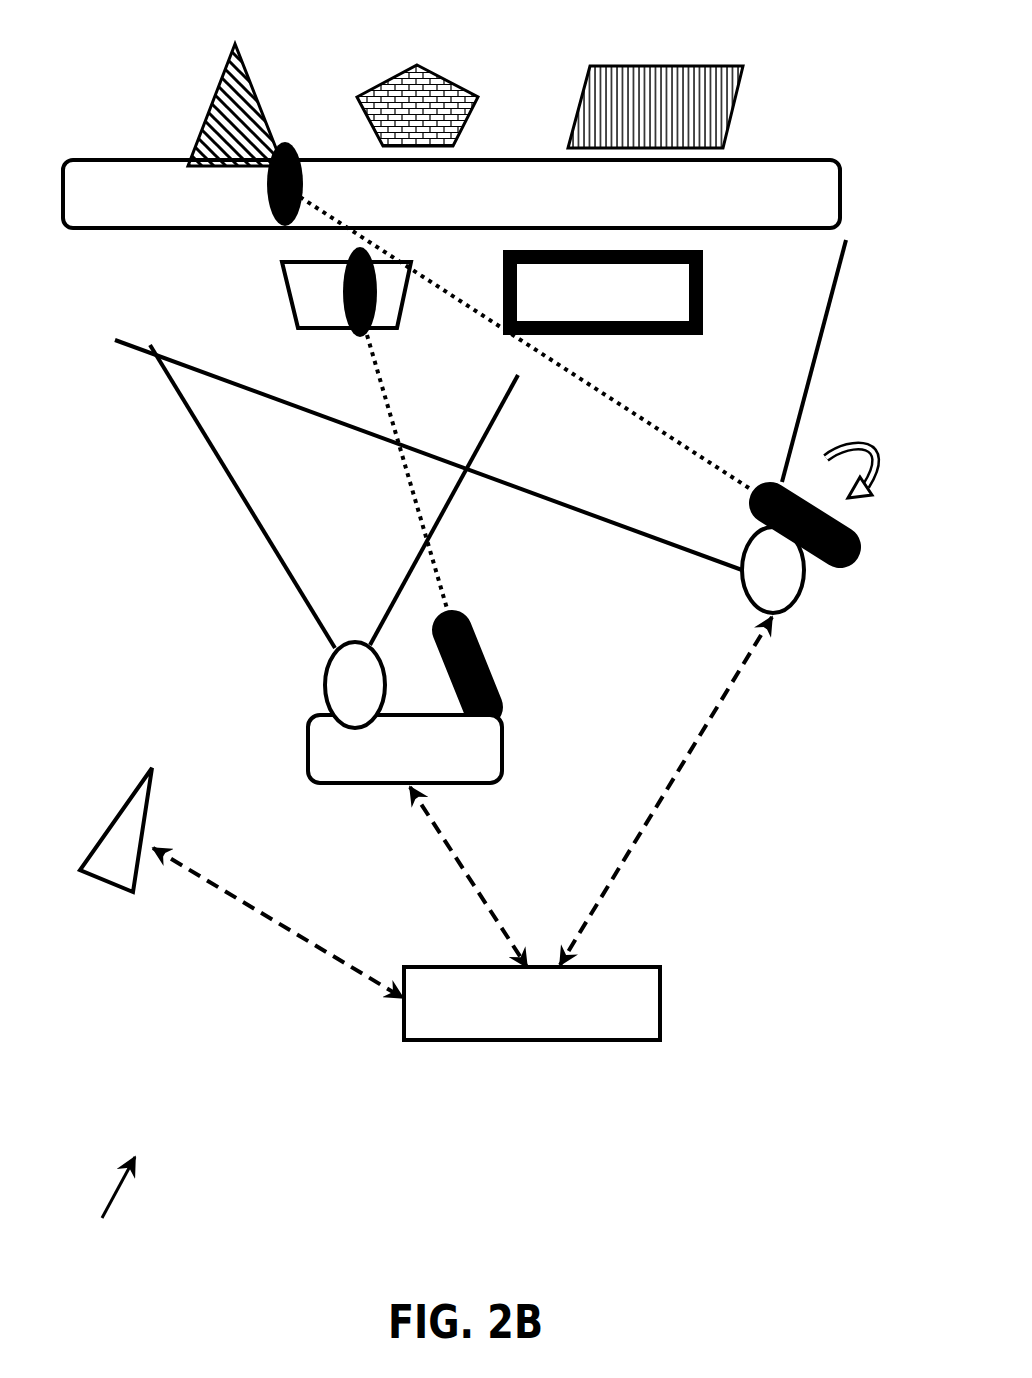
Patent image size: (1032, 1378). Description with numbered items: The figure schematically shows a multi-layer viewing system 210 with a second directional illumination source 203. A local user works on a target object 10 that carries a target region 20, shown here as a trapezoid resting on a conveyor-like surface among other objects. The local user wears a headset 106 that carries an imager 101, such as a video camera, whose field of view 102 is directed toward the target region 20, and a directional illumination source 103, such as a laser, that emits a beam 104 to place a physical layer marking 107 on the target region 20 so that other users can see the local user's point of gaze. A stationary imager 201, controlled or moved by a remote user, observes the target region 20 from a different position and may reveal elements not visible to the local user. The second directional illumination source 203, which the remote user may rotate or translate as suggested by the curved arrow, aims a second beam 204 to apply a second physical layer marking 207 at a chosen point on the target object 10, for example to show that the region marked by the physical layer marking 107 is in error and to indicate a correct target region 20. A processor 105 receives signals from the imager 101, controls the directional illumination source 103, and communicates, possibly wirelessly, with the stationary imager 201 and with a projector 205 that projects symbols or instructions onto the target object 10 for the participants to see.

The target object 10 is at (151, 54).
The target region 20 is at (291, 292).
The imager 101 is at (326, 695).
The field of view 102 is at (272, 536).
The directional illumination source 103 is at (484, 645).
The beam 104 is at (421, 509).
The processor 105 is at (527, 1042).
The headset 106 is at (466, 786).
The physical layer marking 107 is at (375, 315).
The stationary imager 201 is at (746, 585).
The second directional illumination source 203 is at (828, 568).
The second beam 204 is at (681, 445).
The projector 205 is at (108, 903).
The second physical layer marking 207 is at (266, 182).
The multi-layer viewing system 210 is at (94, 1211).